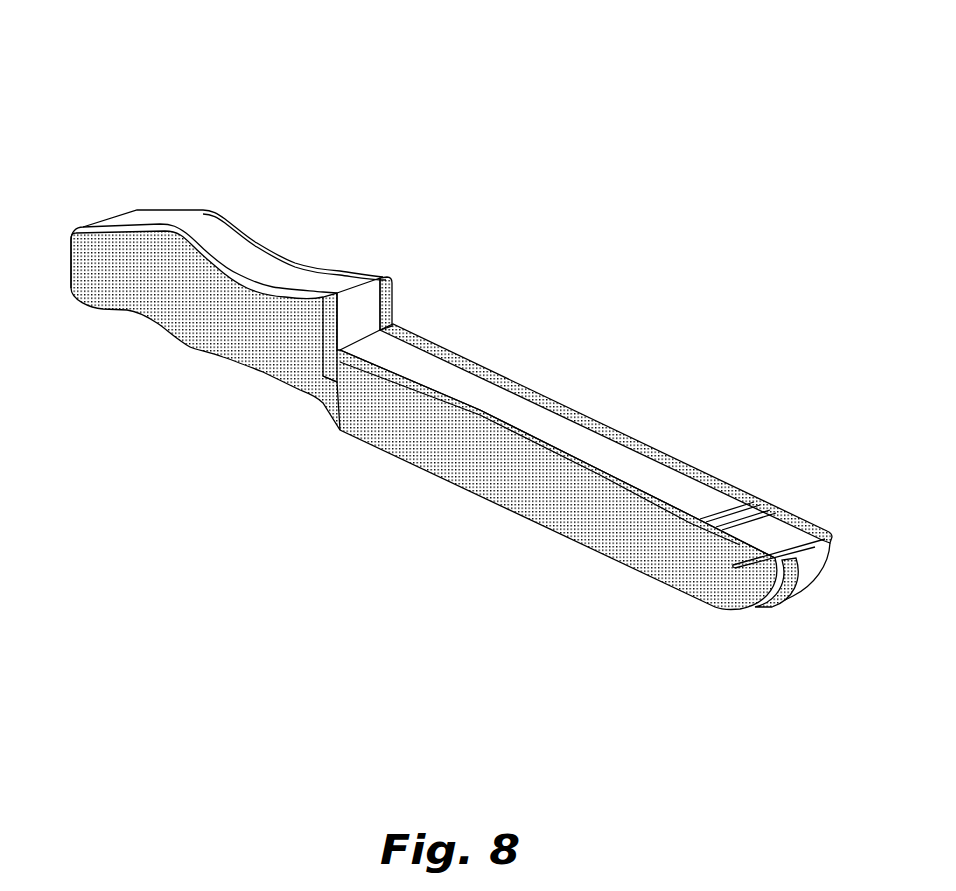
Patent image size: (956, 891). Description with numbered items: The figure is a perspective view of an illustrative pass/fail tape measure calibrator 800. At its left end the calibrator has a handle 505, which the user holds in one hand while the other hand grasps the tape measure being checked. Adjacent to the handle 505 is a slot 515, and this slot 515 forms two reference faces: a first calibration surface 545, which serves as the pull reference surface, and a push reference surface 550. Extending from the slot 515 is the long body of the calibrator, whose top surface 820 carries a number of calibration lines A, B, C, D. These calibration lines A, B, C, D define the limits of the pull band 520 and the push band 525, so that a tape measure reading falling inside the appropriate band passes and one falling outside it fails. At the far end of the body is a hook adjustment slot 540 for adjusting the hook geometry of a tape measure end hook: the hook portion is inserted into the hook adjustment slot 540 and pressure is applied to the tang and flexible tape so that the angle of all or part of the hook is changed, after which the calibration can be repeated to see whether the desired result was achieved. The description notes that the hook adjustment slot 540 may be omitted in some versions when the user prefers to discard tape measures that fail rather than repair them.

The pass/fail tape measure calibrator 800 is at (170, 167).
The handle 505 is at (93, 308).
The slot 515 is at (372, 313).
The push reference surface 550 is at (325, 355).
The first calibration surface 545 is at (337, 373).
The top surface 820 is at (565, 432).
The push band 525 is at (707, 530).
The pull band 520 is at (700, 522).
The hook adjustment slot 540 is at (797, 560).
The calibration line A is at (718, 511).
The calibration line B is at (722, 513).
The calibration line C is at (753, 503).
The calibration line D is at (762, 505).